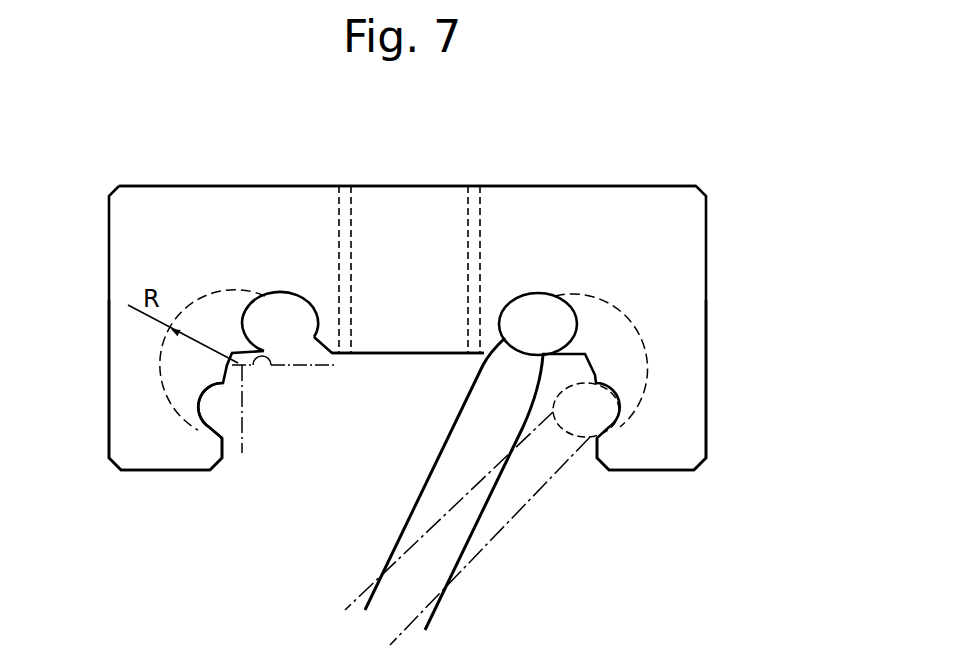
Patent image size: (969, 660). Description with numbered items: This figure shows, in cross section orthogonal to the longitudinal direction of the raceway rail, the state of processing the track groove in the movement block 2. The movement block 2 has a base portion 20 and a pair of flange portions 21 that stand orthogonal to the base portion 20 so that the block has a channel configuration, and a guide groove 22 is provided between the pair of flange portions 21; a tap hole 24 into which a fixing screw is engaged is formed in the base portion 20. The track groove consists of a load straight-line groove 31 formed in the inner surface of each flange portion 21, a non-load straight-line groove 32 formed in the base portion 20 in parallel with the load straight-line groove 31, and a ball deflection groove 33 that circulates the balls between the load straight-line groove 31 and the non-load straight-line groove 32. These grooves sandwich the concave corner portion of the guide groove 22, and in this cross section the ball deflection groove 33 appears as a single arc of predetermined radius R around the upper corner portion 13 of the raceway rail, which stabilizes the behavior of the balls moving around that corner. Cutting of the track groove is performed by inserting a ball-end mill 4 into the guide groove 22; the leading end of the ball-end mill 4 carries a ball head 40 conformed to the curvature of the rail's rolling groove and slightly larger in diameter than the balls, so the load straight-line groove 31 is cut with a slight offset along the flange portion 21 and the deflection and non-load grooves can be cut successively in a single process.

The movement block 2 is at (669, 152).
The base portion 20 is at (312, 203).
The flange portions 21 is at (109, 425).
The guide groove 22 is at (390, 357).
The tap hole 24 is at (467, 217).
The load straight-line groove 31 is at (214, 432).
The non-load straight-line groove 32 is at (283, 293).
The ball deflection groove 33 is at (222, 293).
The ball head 40 is at (537, 307).
The upper corner portion 13 is at (275, 367).
The ball-end mill 4 is at (430, 448).